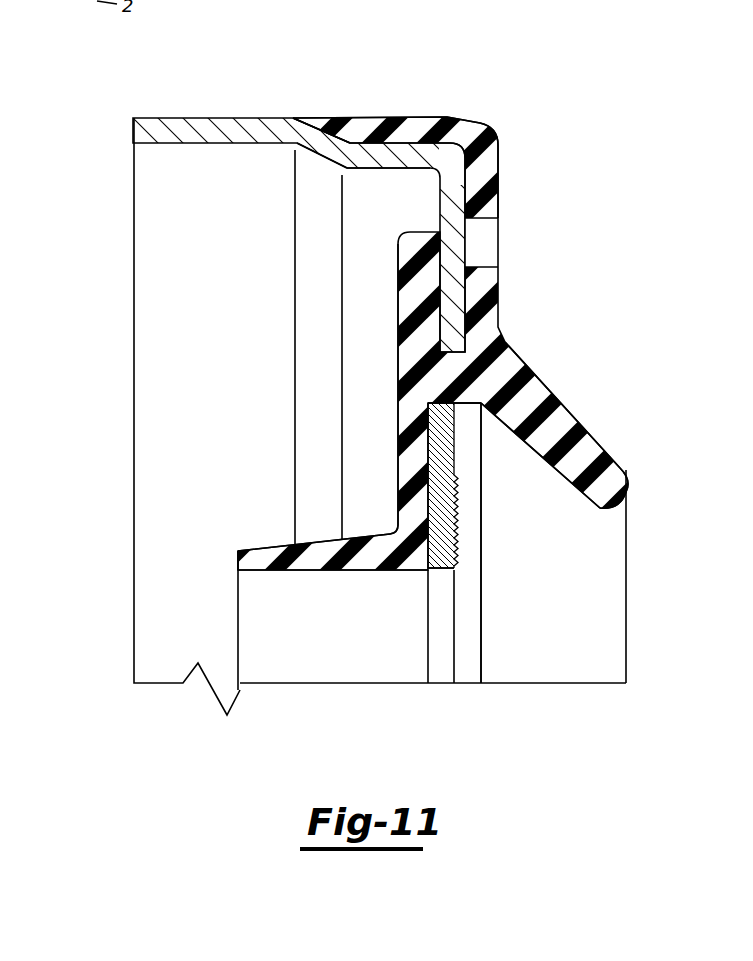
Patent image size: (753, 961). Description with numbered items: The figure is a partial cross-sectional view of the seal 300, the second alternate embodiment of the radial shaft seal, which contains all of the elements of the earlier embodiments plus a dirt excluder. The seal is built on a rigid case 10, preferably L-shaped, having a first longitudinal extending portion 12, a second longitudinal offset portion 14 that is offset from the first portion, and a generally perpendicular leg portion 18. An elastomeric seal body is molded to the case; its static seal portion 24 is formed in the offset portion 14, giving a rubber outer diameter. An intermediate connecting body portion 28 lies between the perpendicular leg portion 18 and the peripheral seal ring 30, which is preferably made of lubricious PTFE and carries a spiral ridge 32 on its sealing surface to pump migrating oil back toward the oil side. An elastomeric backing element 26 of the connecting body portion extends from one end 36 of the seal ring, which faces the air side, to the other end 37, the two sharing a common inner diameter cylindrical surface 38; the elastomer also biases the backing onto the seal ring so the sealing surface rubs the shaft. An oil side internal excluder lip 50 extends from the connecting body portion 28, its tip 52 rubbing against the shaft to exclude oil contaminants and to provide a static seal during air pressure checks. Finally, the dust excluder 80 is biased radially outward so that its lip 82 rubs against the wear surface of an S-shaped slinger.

The seal 300 is at (217, 348).
The offset portion 14 is at (236, 128).
The rigid case 10 is at (317, 162).
The first longitudinal extending portion 12 is at (387, 167).
The perpendicular leg portion 18 is at (452, 242).
The static seal portion 24 is at (364, 125).
The connecting body portion 28 is at (408, 420).
The other end of the seal ring 37 is at (443, 402).
The common inner diameter cylindrical surface 38 is at (430, 447).
The spiral ridge 32 is at (455, 500).
The peripheral seal ring 30 is at (470, 528).
The one end of the seal ring 36 is at (433, 572).
The elastomeric backing element 26 is at (395, 532).
The dust excluder 80 is at (279, 548).
The lip of the dust excluder 82 is at (238, 562).
The excluder lip 50 is at (567, 423).
The tip of the excluder lip 52 is at (615, 497).